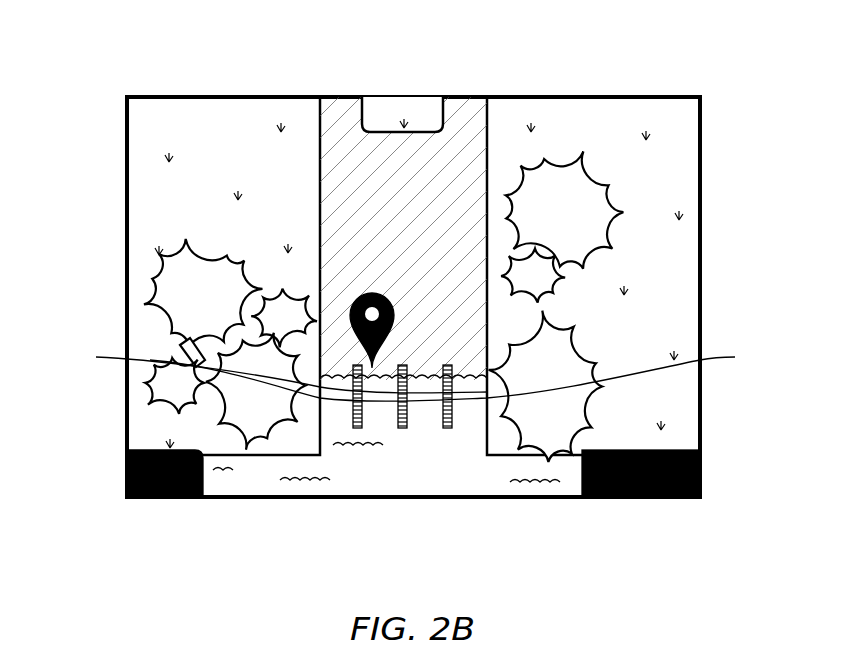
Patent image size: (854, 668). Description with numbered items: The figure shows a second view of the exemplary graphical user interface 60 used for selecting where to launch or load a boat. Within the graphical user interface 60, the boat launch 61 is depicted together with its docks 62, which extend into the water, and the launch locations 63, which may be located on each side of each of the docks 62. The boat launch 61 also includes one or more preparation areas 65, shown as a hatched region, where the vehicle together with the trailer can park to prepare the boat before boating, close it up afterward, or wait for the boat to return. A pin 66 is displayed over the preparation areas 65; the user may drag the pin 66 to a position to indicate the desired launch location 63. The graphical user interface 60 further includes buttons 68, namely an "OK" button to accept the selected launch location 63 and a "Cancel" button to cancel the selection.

The graphical user interface 60 is at (166, 74).
The boat launch 61 is at (466, 95).
The docks 62 is at (418, 373).
The launch locations 63 is at (462, 405).
The preparation areas 65 is at (357, 162).
The pin 66 is at (379, 292).
The OK and CANCEL buttons 68 is at (153, 498).